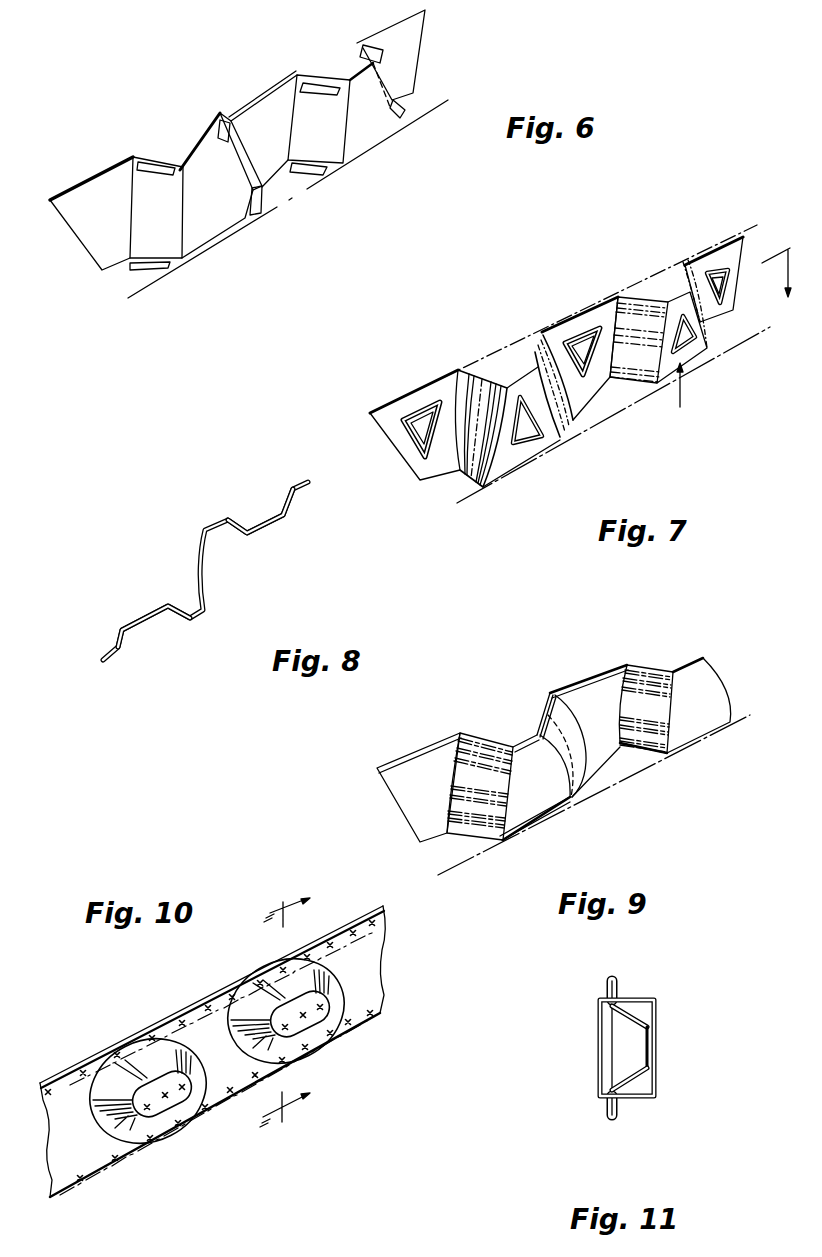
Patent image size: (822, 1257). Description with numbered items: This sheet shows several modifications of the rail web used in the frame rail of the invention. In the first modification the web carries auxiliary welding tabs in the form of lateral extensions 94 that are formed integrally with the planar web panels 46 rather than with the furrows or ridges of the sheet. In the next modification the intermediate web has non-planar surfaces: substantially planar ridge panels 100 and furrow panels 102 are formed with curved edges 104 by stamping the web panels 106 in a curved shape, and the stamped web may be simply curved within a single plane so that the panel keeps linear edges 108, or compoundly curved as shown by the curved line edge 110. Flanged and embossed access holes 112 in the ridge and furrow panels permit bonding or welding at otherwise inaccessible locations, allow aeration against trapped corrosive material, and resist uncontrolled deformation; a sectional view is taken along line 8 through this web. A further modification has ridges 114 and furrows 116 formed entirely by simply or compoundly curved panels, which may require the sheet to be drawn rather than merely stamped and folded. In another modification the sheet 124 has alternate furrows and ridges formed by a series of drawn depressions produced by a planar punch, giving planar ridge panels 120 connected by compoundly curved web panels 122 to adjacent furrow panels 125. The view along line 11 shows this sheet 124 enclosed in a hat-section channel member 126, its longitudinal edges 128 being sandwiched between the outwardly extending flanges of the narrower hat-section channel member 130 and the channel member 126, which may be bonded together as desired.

In FIG. 6, the planar web panels 46 is at (338, 109).
In FIG. 6, the lateral extensions 94 is at (323, 83).
In FIG. 7, the ridge panels 100 is at (695, 355).
In FIG. 7, the furrow panels 102 is at (573, 327).
In FIG. 7, the curved edges 104 is at (555, 440).
In FIG. 7, the web panels 106 is at (467, 463).
In FIG. 8, the web panels 106 is at (205, 568).
In FIG. 7, the linear edges 108 is at (648, 297).
In FIG. 7, the curved line edge 110 is at (495, 368).
In FIG. 7, the access holes 112 is at (523, 413).
In FIG. 8, the access holes 112 is at (267, 503).
In FIG. 9, the ridges 114 is at (542, 795).
In FIG. 9, the furrows 116 is at (602, 730).
In FIG. 10, the planar ridge panels 120 is at (173, 1100).
In FIG. 11, the planar ridge panels 120 is at (662, 1060).
In FIG. 10, the compoundly curved web panels 122 is at (118, 1117).
In FIG. 11, the compoundly curved web panels 122 is at (640, 1018).
In FIG. 10, the sheet 124 is at (215, 1017).
In FIG. 11, the sheet 124 is at (637, 1083).
In FIG. 10, the furrow panels 125 is at (223, 1050).
In FIG. 11, the channel member 126 is at (640, 1103).
In FIG. 10, the longitudinal edges 128 is at (102, 1055).
In FIG. 11, the longitudinal edges 128 is at (620, 985).
In FIG. 11, the hat-section channel member 130 is at (600, 1082).
In FIG. 7, the line 8— 8 is at (734, 339).
In FIG. 10, the line 11— 11 is at (300, 1003).